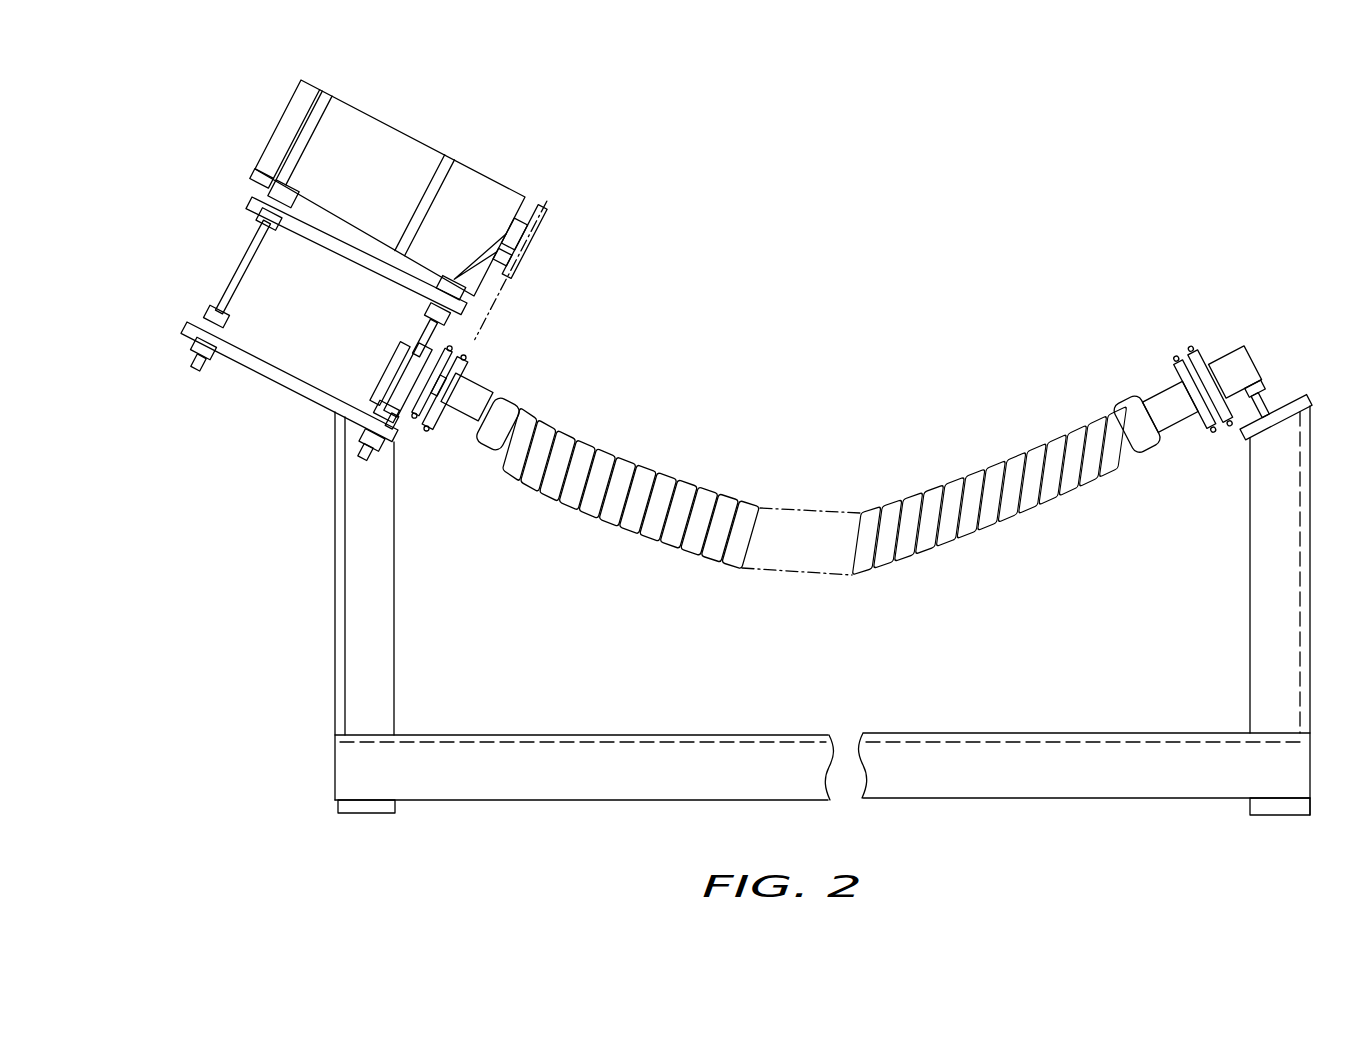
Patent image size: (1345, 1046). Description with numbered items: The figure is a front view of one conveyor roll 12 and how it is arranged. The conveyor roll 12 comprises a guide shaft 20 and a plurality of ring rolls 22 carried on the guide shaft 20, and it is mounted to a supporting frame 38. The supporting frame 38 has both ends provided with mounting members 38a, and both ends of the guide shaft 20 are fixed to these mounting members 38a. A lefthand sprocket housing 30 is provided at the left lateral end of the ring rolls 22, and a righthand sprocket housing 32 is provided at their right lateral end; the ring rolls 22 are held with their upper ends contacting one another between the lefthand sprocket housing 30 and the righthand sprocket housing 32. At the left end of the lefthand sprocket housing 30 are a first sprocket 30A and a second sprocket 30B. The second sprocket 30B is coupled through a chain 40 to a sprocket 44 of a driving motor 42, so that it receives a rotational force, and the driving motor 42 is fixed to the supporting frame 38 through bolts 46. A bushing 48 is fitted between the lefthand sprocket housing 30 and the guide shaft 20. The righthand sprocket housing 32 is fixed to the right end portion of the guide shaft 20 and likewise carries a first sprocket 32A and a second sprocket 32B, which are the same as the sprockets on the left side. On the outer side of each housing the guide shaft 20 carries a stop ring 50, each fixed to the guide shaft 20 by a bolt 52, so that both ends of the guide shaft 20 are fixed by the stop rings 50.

The conveyor roll 12 is at (819, 515).
The guide shaft 20 is at (406, 359).
The ring rolls 22 is at (708, 490).
The lefthand sprocket housing 30 is at (481, 389).
The first sprocket 30A is at (416, 416).
The second sprocket 30B is at (428, 426).
The righthand sprocket housing 32 is at (1182, 418).
The first sprocket 32A is at (1190, 356).
The second sprocket 32B is at (1180, 360).
The supporting frame 38 is at (747, 735).
The mounting members 38a is at (377, 380).
The chain 40 is at (488, 311).
The driving motor 42 is at (393, 126).
The sprocket 44 is at (548, 222).
The bolts 46 is at (244, 284).
The bushing 48 is at (401, 346).
The stop ring 50 is at (450, 352).
The bolt 52 is at (403, 400).